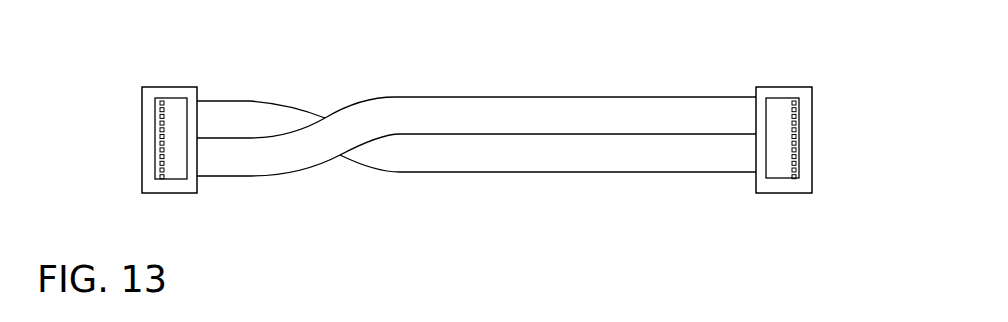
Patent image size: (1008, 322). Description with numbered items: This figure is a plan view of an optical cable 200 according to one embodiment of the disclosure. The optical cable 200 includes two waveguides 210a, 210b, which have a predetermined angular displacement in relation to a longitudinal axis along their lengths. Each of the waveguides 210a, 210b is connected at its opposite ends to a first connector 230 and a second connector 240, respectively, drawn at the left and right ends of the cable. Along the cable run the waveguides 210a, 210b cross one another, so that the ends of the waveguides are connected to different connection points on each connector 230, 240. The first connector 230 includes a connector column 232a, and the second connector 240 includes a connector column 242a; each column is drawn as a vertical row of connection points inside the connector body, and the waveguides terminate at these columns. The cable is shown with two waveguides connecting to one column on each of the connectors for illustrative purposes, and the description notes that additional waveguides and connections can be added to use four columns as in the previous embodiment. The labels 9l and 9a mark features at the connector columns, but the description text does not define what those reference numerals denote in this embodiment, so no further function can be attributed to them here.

The optical cable 200 is at (98, 118).
The contacts 9l is at (158, 103).
The contact 9a is at (158, 176).
The first connector 230 is at (188, 193).
The second connector 240 is at (775, 193).
The connector column 232a is at (163, 186).
The connector column 242a is at (796, 92).
The waveguide 210a is at (545, 162).
The waveguide 210b is at (562, 103).